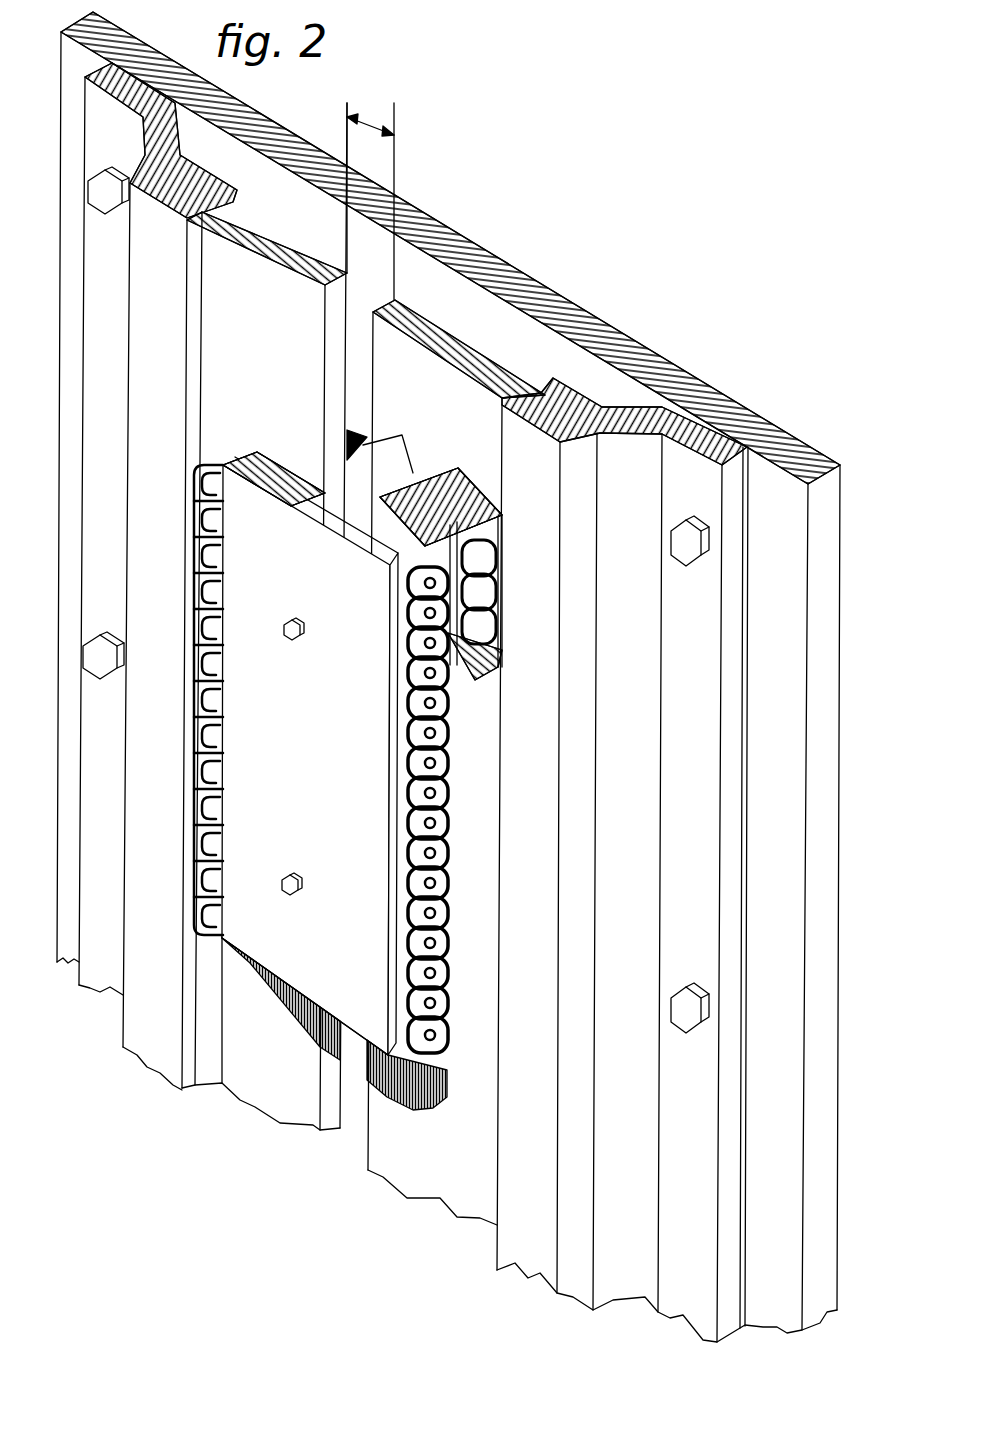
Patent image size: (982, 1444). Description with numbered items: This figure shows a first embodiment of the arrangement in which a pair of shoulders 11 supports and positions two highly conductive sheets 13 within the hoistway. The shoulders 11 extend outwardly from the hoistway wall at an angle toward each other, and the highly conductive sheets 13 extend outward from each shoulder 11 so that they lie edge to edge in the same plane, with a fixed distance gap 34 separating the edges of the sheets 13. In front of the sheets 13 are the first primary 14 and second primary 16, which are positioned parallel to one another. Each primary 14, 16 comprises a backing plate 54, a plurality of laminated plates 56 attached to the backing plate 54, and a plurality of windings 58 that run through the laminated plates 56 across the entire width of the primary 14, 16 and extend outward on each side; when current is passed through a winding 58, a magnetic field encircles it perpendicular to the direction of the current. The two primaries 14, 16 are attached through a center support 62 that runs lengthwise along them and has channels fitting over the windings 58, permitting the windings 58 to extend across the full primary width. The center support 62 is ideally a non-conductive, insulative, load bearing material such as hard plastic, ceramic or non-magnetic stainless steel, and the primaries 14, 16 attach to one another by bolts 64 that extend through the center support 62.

The shoulder 11 is at (100, 115).
The highly conductive sheet 13 is at (262, 232).
The first primary 14 is at (242, 458).
The second primary 16 is at (415, 490).
The fixed distance gap 34 is at (368, 122).
The backing plate 54 is at (288, 955).
The laminated plates 56 is at (430, 550).
The windings 58 is at (200, 820).
The center support 62 is at (363, 483).
The bolts 64 is at (285, 640).